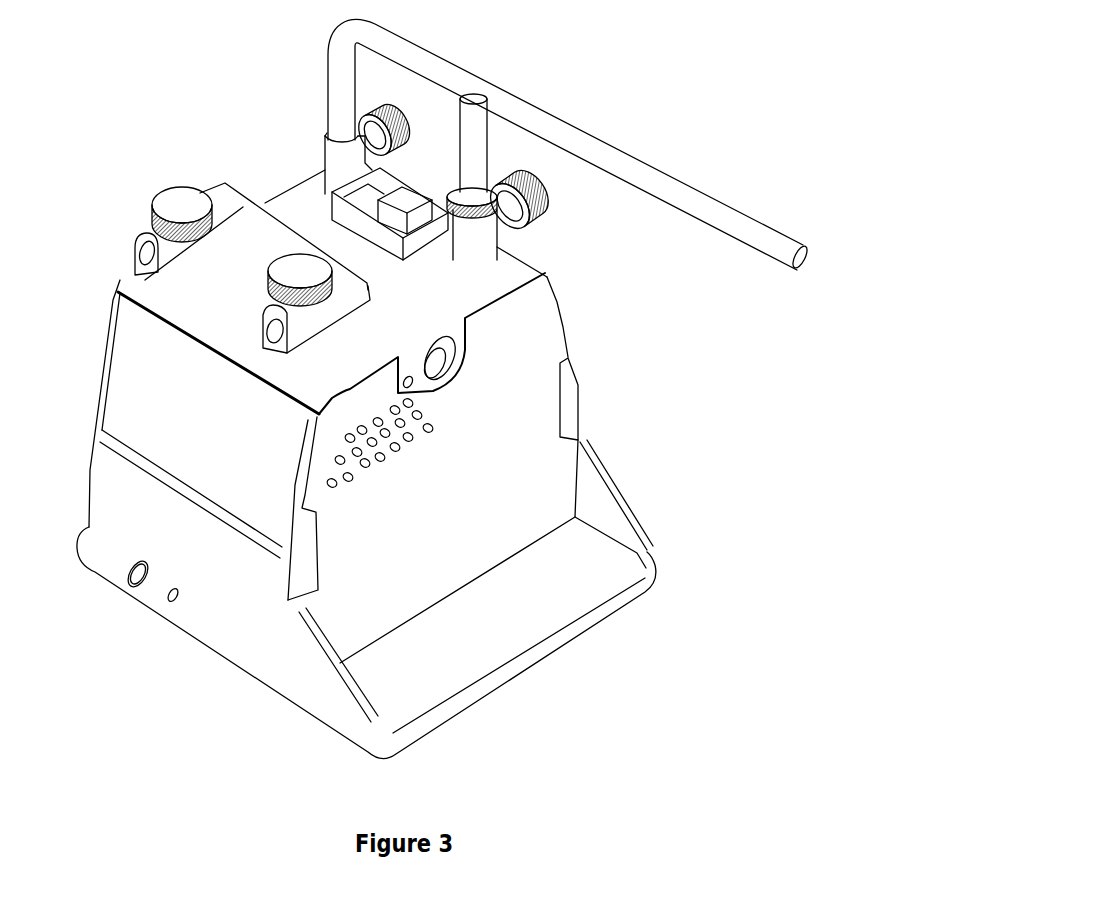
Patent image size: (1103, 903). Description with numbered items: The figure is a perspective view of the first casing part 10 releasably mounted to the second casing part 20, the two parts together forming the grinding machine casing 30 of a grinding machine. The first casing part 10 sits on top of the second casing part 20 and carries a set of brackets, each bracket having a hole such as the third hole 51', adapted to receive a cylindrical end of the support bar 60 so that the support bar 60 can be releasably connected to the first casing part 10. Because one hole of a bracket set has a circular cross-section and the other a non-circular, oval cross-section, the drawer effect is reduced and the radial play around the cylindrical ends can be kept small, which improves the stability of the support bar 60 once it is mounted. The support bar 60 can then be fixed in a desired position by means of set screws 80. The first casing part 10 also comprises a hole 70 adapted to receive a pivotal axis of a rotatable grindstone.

The grinding machine casing 30 is at (577, 61).
The support bar 60 is at (602, 143).
The first casing part 10 is at (443, 300).
The second casing part 20 is at (507, 470).
The hole 70 is at (428, 358).
The set screws 80 is at (297, 273).
The third hole 51' is at (154, 300).